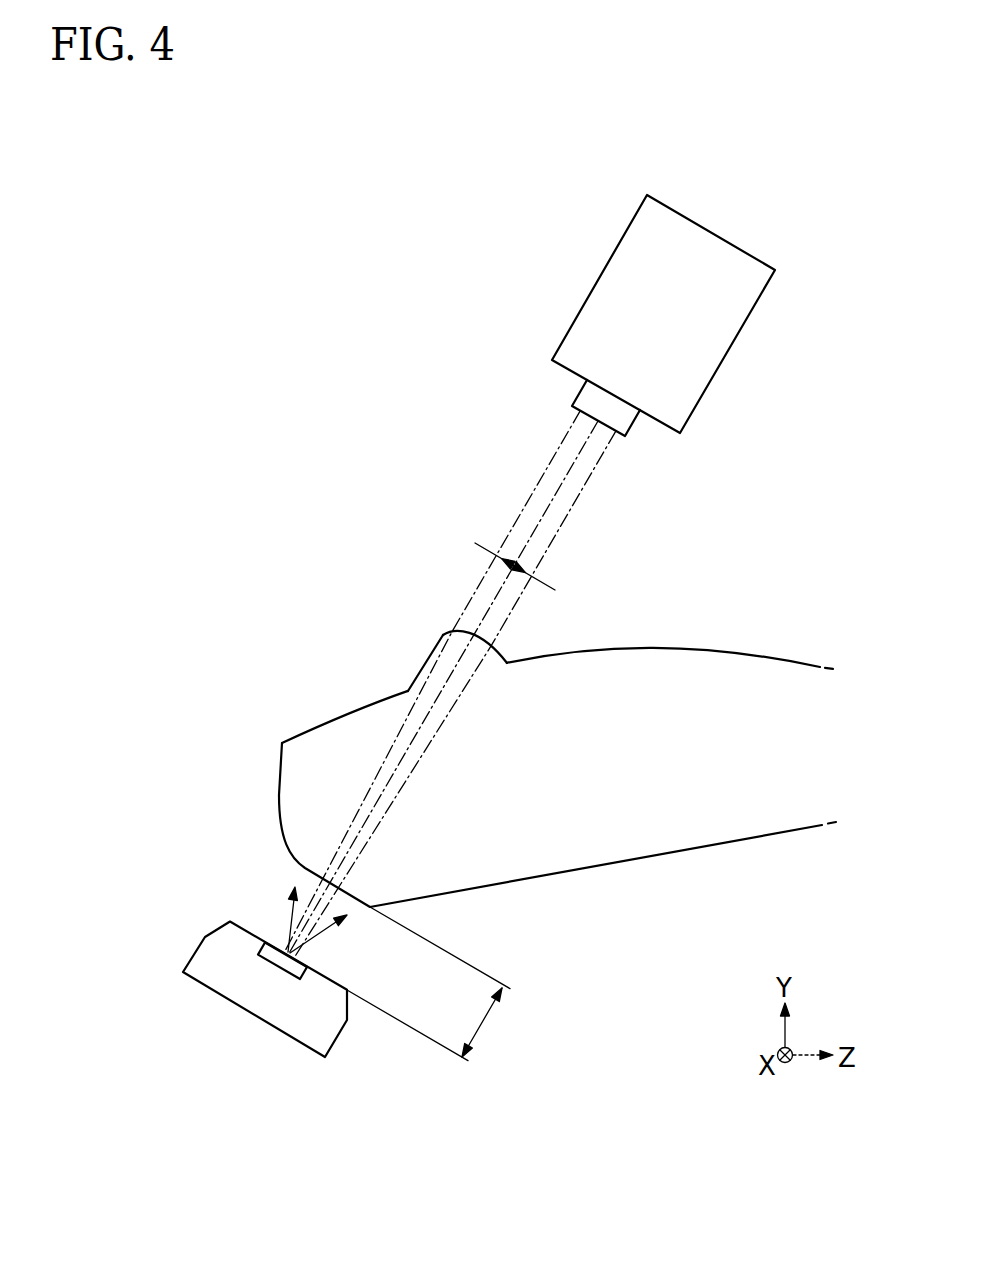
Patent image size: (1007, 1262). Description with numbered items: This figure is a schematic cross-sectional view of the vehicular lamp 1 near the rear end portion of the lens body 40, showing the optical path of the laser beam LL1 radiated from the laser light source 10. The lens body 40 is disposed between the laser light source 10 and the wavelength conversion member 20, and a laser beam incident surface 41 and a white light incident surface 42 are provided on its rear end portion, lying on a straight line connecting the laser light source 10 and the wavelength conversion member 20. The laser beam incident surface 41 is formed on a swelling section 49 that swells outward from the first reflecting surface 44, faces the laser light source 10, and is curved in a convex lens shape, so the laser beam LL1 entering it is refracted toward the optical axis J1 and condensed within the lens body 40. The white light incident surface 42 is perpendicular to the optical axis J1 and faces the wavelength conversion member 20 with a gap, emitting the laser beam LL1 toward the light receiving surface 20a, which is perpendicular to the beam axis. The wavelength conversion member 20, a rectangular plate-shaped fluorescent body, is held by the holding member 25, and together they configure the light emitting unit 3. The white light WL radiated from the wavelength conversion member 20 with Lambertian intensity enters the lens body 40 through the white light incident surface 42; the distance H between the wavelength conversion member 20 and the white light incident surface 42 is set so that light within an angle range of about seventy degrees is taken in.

The vehicular lamp 1 is at (330, 302).
The laser light source 10 is at (581, 276).
The optical axis J1 is at (572, 467).
The laser beam LL1 is at (568, 518).
The lens body 40 is at (727, 641).
The first reflecting surface 44 is at (557, 654).
The laser beam incident surface 41 is at (453, 632).
The swelling section 49 is at (428, 656).
The white light incident surface 42 is at (308, 872).
The white light WL is at (338, 928).
The light emitting unit 3 is at (363, 1117).
The wavelength conversion member 20 is at (293, 972).
The light receiving surface 20a is at (273, 943).
The holding member 25 is at (341, 1033).
The distance H is at (484, 1022).